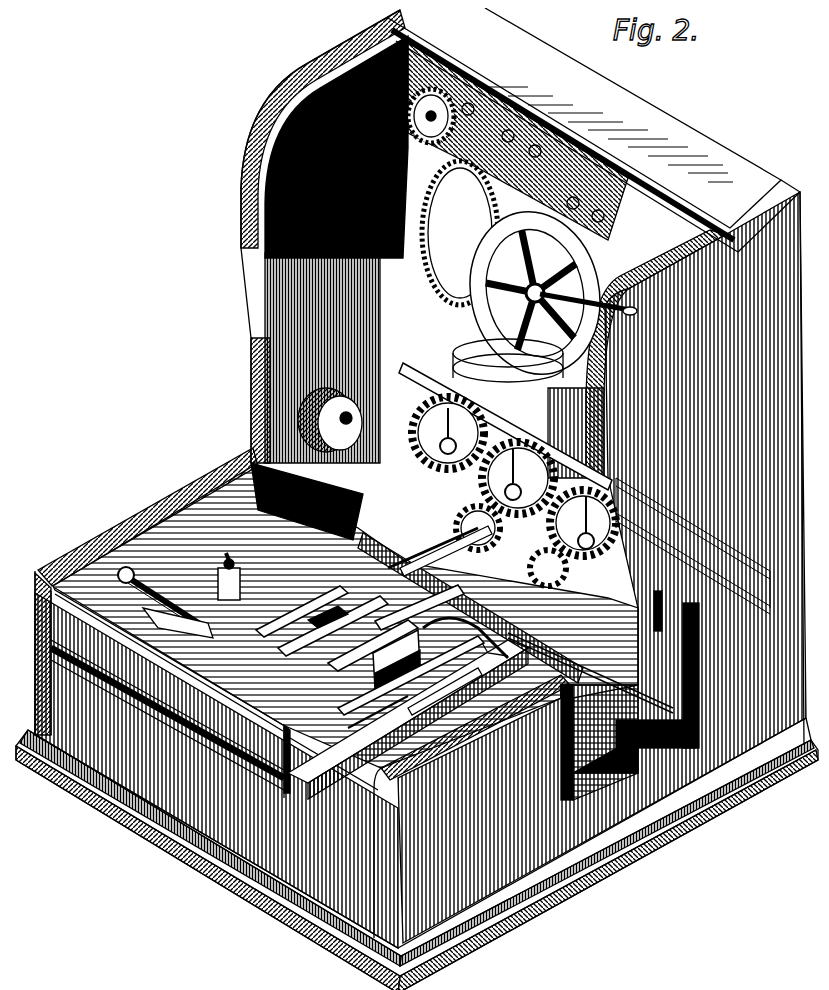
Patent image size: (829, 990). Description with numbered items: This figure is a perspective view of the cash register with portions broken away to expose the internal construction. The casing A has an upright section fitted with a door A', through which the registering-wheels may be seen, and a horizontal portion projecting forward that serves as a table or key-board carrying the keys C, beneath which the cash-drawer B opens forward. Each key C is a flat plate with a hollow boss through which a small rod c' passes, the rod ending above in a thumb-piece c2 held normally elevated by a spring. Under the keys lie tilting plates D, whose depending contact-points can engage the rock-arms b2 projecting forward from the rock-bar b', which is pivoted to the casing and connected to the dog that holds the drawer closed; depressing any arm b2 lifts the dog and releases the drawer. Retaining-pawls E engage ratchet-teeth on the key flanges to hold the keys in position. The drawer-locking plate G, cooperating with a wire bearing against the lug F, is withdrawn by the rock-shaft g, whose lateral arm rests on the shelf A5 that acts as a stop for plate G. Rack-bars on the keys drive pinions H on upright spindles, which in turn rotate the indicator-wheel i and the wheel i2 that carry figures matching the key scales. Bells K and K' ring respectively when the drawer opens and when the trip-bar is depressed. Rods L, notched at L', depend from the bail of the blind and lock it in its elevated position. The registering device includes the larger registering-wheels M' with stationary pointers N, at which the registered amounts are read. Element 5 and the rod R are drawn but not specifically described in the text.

The casing A is at (417, 499).
The door A' is at (302, 394).
The shelf A5 is at (345, 632).
The cash-drawer B is at (380, 479).
The key C is at (315, 549).
The thumb-piece c2 is at (171, 603).
The rod c' is at (169, 621).
The tilting plate D is at (302, 611).
The retaining-pawl E is at (348, 625).
The lug F is at (396, 659).
The plate G is at (465, 635).
The rock-shaft g is at (408, 696).
The pinion H is at (440, 551).
The rock-bar b' is at (485, 523).
The rock-arm b2 is at (419, 607).
The rod R is at (590, 652).
The bell K is at (330, 420).
The bell K' is at (518, 141).
The rod L is at (518, 478).
The notch L' is at (448, 433).
The registering-wheel M' is at (489, 508).
The pointer N is at (583, 523).
The indicator-wheel i is at (472, 244).
The wheel i2 is at (546, 292).
The drum 5 is at (528, 408).